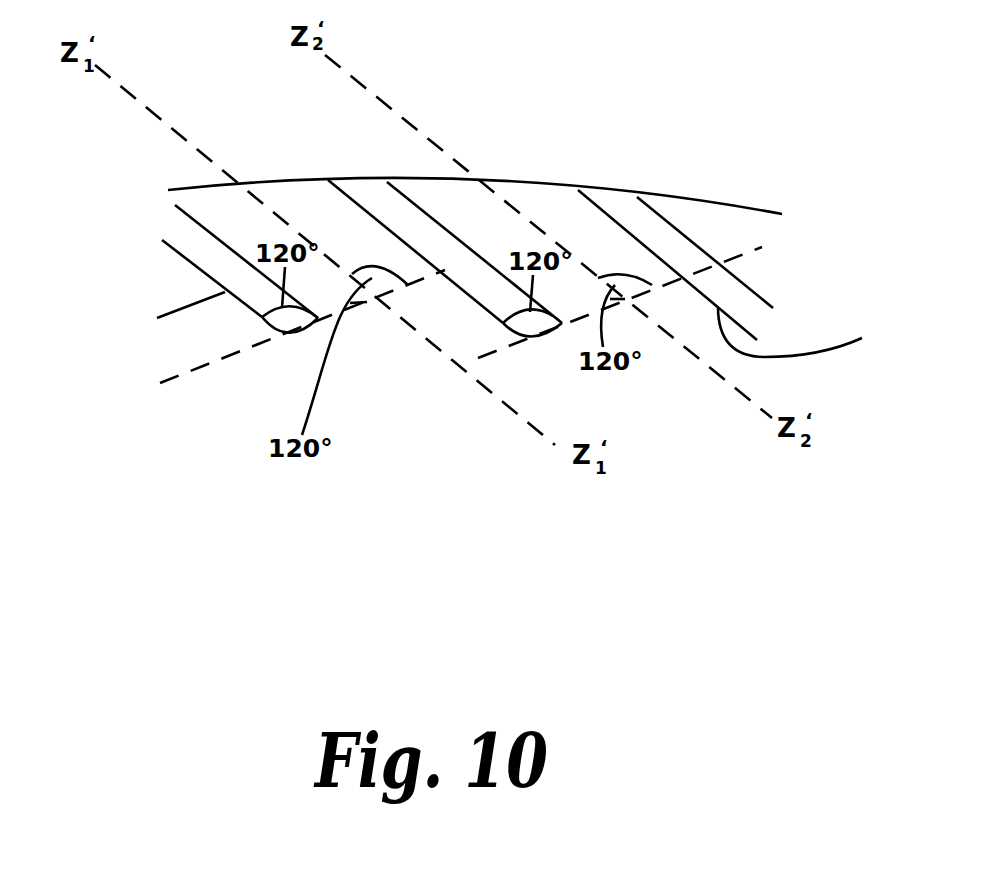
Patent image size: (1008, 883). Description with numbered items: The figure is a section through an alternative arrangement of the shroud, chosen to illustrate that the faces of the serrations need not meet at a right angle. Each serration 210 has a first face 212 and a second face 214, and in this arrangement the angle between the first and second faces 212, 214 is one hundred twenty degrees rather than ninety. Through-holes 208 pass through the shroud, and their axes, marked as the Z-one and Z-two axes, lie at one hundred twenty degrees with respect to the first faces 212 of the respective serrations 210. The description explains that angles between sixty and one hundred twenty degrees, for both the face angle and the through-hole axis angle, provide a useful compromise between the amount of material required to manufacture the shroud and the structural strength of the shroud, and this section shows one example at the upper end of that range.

The through-hole 208 is at (313, 205).
The serration 210 is at (215, 207).
The first face 212 is at (362, 305).
The second face 214 is at (185, 260).